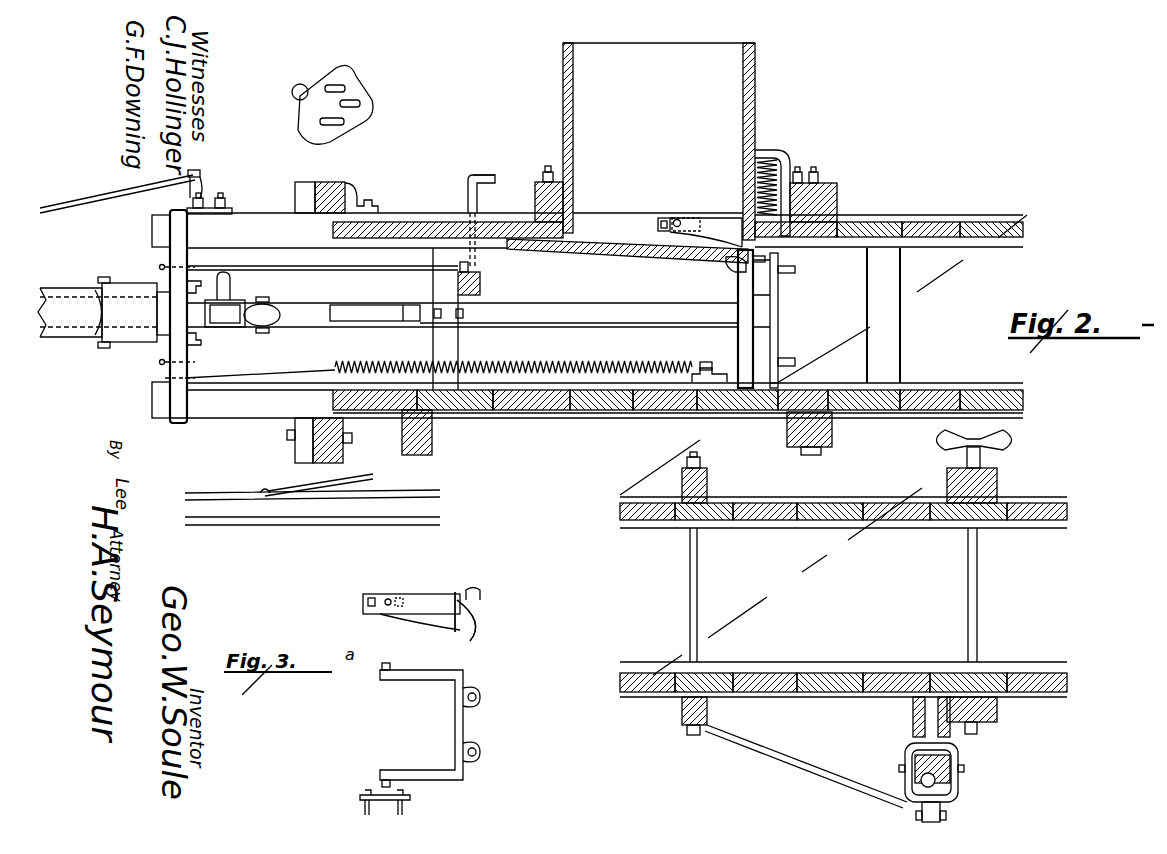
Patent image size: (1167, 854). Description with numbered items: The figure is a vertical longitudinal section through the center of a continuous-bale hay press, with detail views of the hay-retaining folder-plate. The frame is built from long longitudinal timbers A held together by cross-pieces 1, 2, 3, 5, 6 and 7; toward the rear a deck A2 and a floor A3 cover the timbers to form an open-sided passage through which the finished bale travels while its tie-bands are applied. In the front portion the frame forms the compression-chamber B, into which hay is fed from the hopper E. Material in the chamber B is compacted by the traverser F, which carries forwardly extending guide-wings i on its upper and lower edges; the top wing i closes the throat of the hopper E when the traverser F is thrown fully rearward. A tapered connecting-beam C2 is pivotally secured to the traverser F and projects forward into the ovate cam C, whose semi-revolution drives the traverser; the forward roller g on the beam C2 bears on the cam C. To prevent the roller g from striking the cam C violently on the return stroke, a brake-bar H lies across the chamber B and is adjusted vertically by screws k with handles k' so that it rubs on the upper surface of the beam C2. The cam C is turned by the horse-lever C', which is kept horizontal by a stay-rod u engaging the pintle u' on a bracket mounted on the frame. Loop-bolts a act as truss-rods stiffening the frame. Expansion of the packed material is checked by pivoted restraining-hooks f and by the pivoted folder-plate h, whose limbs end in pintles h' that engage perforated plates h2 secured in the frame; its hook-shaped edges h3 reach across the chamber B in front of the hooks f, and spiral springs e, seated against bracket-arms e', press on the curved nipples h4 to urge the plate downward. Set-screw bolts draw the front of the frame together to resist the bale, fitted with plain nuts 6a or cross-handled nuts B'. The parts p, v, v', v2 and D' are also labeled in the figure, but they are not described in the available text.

In FIG. 2, the longitudinal frame timber A is at (838, 207).
In FIG. 2, the deck A2 is at (895, 503).
In FIG. 2, the floor A3 is at (1040, 698).
In FIG. 2, the feed box or hopper E is at (659, 141).
In FIG. 2, the spiral spring e is at (786, 186).
In FIG. 2, the bracket-arm e' is at (769, 173).
In FIG. 2, the folder-plate h is at (706, 232).
In FIG. 3a, the folder-plate h is at (429, 686).
In FIG. 2, the pintle h' is at (688, 206).
In FIG. 3a, the pintle h' is at (408, 703).
In FIG. 2, the perforated plate h2 is at (657, 226).
In FIG. 3a, the perforated plate h2 is at (366, 602).
In FIG. 2, the hook-shaped edge h3 is at (724, 260).
In FIG. 3a, the hook-shaped edge h3 is at (470, 641).
In FIG. 2, the curved horn or nipple h4 is at (778, 259).
In FIG. 3a, the curved horn or nipple h4 is at (496, 752).
In FIG. 2, the guide-wing i is at (614, 252).
In FIG. 2, the traverser F is at (765, 326).
In FIG. 2, the pivoted restraining-hook f is at (814, 292).
In FIG. 2, the ovate cam C is at (462, 315).
In FIG. 2, the horse-lever C' is at (239, 414).
In FIG. 2, the connecting-beam C2 is at (579, 310).
In FIG. 2, the loop-bolt a is at (404, 311).
In FIG. 2, the compression-chamber B is at (448, 355).
In FIG. 2, the cross-handled nut B' is at (827, 348).
In FIG. 2, the pin p is at (158, 282).
In FIG. 2, the forward roller g is at (289, 315).
In FIG. 2, the cross-piece 1 is at (332, 314).
In FIG. 2, the cross-piece 2 is at (424, 432).
In FIG. 2, the cross-piece 3 is at (549, 194).
In FIG. 2, the cross-piece 5 is at (818, 433).
In FIG. 2, the cross-piece 6 is at (701, 611).
In FIG. 2, the nut 6a is at (697, 462).
In FIG. 2, the cross-piece 7 is at (1010, 437).
In FIG. 2, the screw k is at (482, 221).
In FIG. 2, the handle k' is at (487, 160).
In FIG. 2, the brake-bar H is at (481, 287).
In FIG. 2, the stay-rod u is at (206, 335).
In FIG. 2, the pintle u' is at (203, 180).
In FIG. 2, the plate v is at (293, 133).
In FIG. 2, the pivot v' is at (289, 104).
In FIG. 2, the stud v2 is at (265, 488).
In FIG. 2, the bearing D' is at (944, 759).